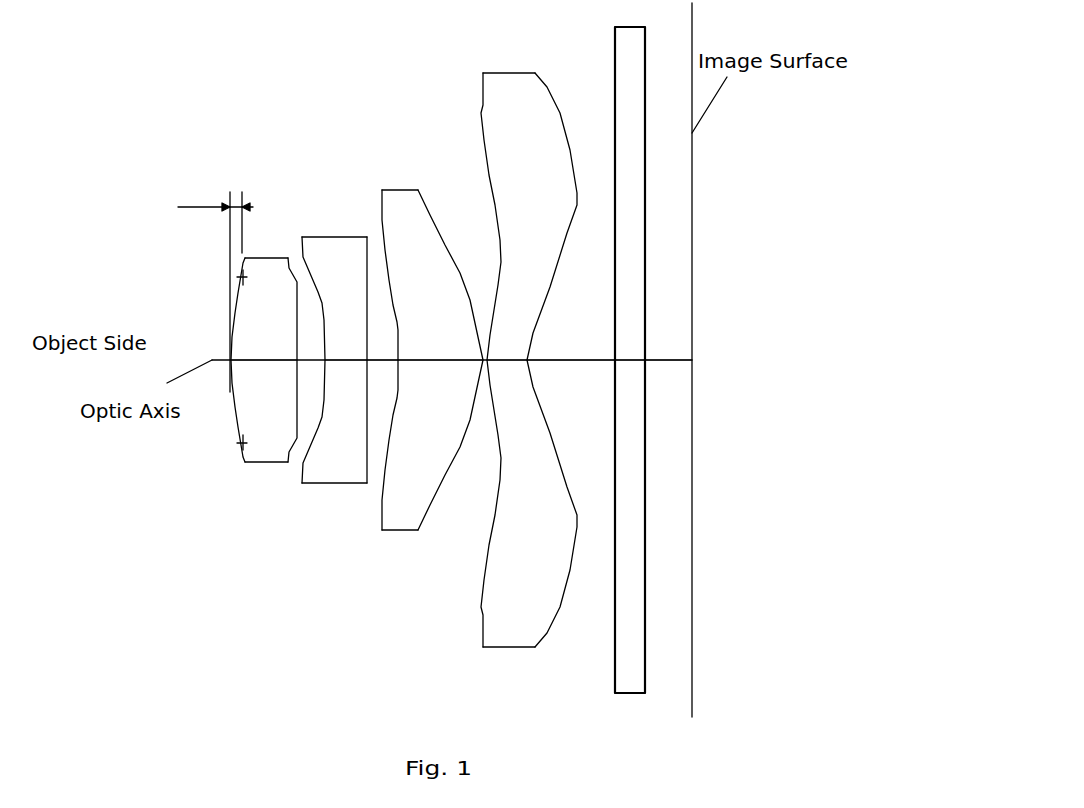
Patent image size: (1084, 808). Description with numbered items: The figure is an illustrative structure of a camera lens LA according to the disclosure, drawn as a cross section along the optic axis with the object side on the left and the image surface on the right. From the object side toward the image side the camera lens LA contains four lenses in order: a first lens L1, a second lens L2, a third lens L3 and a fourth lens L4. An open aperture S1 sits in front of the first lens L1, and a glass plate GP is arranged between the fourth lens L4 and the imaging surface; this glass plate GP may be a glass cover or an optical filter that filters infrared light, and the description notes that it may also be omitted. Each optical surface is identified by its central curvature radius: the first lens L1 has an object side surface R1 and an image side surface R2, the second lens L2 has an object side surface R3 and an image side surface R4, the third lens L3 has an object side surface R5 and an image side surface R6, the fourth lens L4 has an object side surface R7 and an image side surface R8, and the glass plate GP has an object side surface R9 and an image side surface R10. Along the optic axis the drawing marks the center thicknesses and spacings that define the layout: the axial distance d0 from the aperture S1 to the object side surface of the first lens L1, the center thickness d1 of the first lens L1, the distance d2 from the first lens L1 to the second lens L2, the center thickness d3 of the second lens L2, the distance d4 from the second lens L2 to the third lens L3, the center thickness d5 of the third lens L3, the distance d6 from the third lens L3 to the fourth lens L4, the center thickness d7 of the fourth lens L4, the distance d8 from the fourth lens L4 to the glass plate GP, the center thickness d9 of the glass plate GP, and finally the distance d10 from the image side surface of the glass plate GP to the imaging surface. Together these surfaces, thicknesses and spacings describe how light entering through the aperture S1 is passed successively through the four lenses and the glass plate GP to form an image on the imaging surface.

The camera lens LA is at (253, 124).
The first lens L1 is at (244, 413).
The second lens L2 is at (348, 406).
The third lens L3 is at (405, 331).
The fourth lens L4 is at (492, 374).
The glass plate GP is at (638, 362).
The aperture S1 is at (235, 267).
The curvature radius of the first lens's object side surface R1 is at (232, 390).
The curvature radius of the first lens's image side surface R2 is at (297, 387).
The curvature radius of the second lens's object side surface R3 is at (320, 395).
The curvature radius of the second lens's image side surface R4 is at (367, 395).
The curvature radius of the third lens's object side surface R5 is at (395, 323).
The curvature radius of the third lens's image side surface R6 is at (480, 355).
The curvature radius of the fourth lens's object side surface R7 is at (490, 395).
The curvature radius of the fourth lens's image side surface R8 is at (535, 405).
The curvature radius of the glass plate's object side surface R9 is at (615, 433).
The curvature radius of the glass plate's image side surface R10 is at (645, 430).
The axial distance from the aperture to the first lens d0 is at (215, 218).
The center thickness of the first lens d1 is at (264, 346).
The axial distance from the first lens to the second lens d2 is at (310, 360).
The center thickness of the second lens d3 is at (346, 346).
The axial distance from the second lens to the third lens d4 is at (382, 346).
The center thickness of the third lens d5 is at (440, 346).
The axial distance from the third lens to the fourth lens d6 is at (480, 350).
The center thickness of the fourth lens d7 is at (507, 346).
The axial distance from the fourth lens to the glass plate d8 is at (571, 346).
The center thickness of the glass plate d9 is at (630, 346).
The axial distance from the glass plate to the imaging surface d10 is at (668, 346).